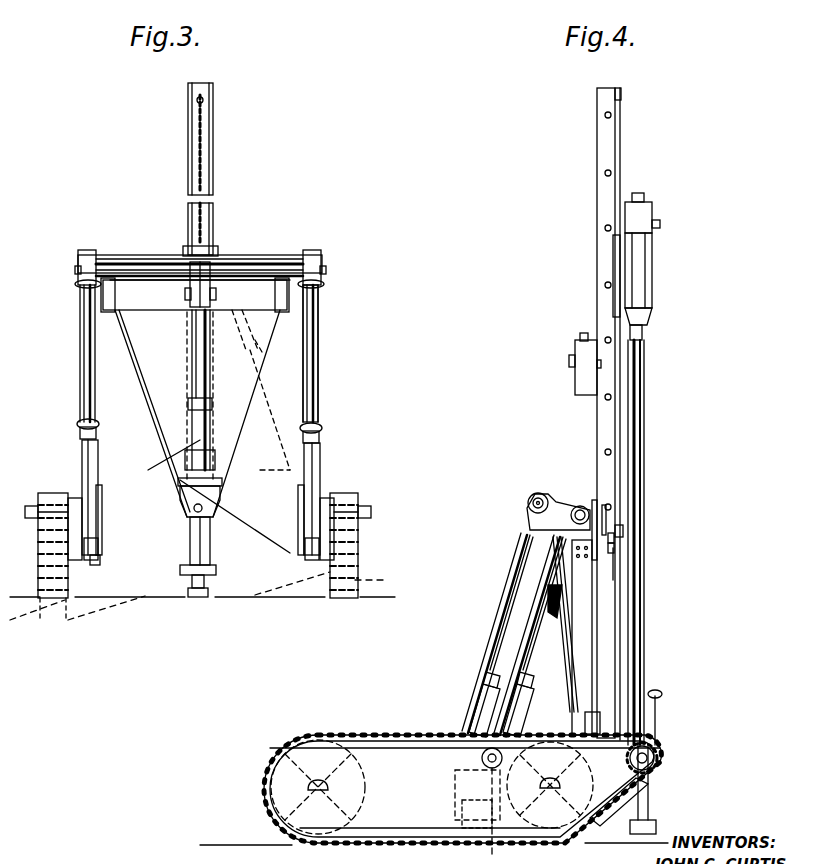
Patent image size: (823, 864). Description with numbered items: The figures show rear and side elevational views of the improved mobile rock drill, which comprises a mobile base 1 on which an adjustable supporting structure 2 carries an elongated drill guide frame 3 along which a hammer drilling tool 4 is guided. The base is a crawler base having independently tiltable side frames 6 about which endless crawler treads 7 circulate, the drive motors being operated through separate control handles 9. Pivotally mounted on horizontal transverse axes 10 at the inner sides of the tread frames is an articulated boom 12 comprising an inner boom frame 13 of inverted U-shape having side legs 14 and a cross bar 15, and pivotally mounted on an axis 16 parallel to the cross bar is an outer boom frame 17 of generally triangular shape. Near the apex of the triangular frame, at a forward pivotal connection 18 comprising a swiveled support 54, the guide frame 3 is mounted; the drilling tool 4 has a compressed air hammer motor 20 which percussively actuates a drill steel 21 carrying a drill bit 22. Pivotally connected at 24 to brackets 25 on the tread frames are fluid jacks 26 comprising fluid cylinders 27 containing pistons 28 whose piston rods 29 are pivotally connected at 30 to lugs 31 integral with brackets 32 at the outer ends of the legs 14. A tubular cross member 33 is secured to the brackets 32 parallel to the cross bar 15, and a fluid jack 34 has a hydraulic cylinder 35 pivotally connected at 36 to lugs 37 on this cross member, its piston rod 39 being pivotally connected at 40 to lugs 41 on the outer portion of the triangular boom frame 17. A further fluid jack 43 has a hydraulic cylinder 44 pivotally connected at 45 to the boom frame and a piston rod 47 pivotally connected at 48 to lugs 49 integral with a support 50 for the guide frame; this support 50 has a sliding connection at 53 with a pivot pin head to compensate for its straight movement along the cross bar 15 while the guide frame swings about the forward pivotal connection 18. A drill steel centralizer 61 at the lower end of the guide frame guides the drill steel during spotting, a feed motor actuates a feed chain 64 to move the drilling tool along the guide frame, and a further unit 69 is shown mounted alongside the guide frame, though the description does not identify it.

In FIG. 3, the mobile base 1 is at (42, 498).
In FIG. 4, the mobile base 1 is at (370, 745).
In FIG. 3, the supporting structure 2 is at (320, 322).
In FIG. 4, the supporting structure 2 is at (556, 498).
In FIG. 3, the drill guide frame 3 is at (213, 143).
In FIG. 4, the drill guide frame 3 is at (597, 420).
In FIG. 4, the hammer drilling tool 4 is at (652, 216).
In FIG. 4, the side frames 6 is at (406, 818).
In FIG. 3, the endless crawler treads 7 is at (38, 572).
In FIG. 4, the endless crawler treads 7 is at (264, 797).
In FIG. 4, the control handles 9 is at (658, 716).
In FIG. 3, the horizontal transverse axes 10 is at (36, 508).
In FIG. 4, the horizontal transverse axes 10 is at (482, 760).
In FIG. 3, the articulated boom 12 is at (120, 262).
In FIG. 4, the articulated boom 12 is at (600, 573).
In FIG. 3, the inner boom frame 13 is at (79, 384).
In FIG. 4, the inner boom frame 13 is at (531, 620).
In FIG. 3, the side arms or legs 14 is at (79, 352).
In FIG. 4, the side arms or legs 14 is at (526, 594).
In FIG. 3, the cross connection portion or cross bar 15 is at (265, 272).
In FIG. 4, the pivot axis 16 is at (581, 505).
In FIG. 3, the outer boom frame 17 is at (200, 425).
In FIG. 4, the outer boom frame 17 is at (596, 620).
In FIG. 3, the forward pivotal connection 18 is at (192, 510).
In FIG. 4, the hammer motor 20 is at (645, 266).
In FIG. 3, the drill steel 21 is at (206, 586).
In FIG. 4, the drill steel 21 is at (622, 528).
In FIG. 3, the drill bit 22 is at (206, 597).
In FIG. 4, the drill bit 22 is at (650, 818).
In FIG. 3, the pivotal connection 24 is at (100, 555).
In FIG. 4, the pivotal connection 24 is at (463, 832).
In FIG. 3, the brackets 25 is at (305, 565).
In FIG. 3, the fluid jacks 26 is at (100, 490).
In FIG. 4, the fluid jacks 26 is at (486, 681).
In FIG. 3, the fluid cylinders 27 is at (82, 458).
In FIG. 4, the fluid cylinders 27 is at (482, 700).
In FIG. 3, the pistons 28 is at (96, 436).
In FIG. 3, the piston rods 29 is at (88, 400).
In FIG. 4, the piston rods 29 is at (503, 640).
In FIG. 3, the pivotal connection 30 is at (76, 284).
In FIG. 3, the lugs 31 is at (76, 270).
In FIG. 3, the brackets 32 is at (82, 255).
In FIG. 3, the tubular cross member 33 is at (250, 262).
In FIG. 3, the fluid jack 34 is at (192, 358).
In FIG. 4, the fluid jack 34 is at (546, 600).
In FIG. 3, the hydraulic cylinder 35 is at (195, 378).
In FIG. 3, the pivotal connection 36 is at (185, 298).
In FIG. 3, the lugs 37 is at (202, 264).
In FIG. 3, the piston rod 39 is at (200, 442).
In FIG. 4, the piston rod 39 is at (562, 680).
In FIG. 3, the pivotal connection 40 is at (218, 498).
In FIG. 3, the lugs 41 is at (200, 468).
In FIG. 4, the fluid jack 43 is at (620, 686).
In FIG. 4, the hydraulic cylinder 44 is at (620, 660).
In FIG. 3, the pivotal connection 45 is at (228, 495).
In FIG. 3, the piston rod 47 is at (232, 312).
In FIG. 4, the piston rod 47 is at (614, 556).
In FIG. 3, the pivotal connection 48 is at (222, 292).
In FIG. 4, the pivotal connection 48 is at (614, 537).
In FIG. 3, the lugs 49 is at (238, 396).
In FIG. 4, the lugs 49 is at (636, 527).
In FIG. 4, the support 50 is at (606, 515).
In FIG. 4, the sliding connection 53 is at (598, 500).
In FIG. 4, the swiveled support 54 is at (596, 718).
In FIG. 3, the drill steel centralizer 61 is at (210, 572).
In FIG. 4, the drill steel centralizer 61 is at (640, 792).
In FIG. 3, the feed chain 64 is at (205, 180).
In FIG. 4, the valve unit 69 is at (568, 364).